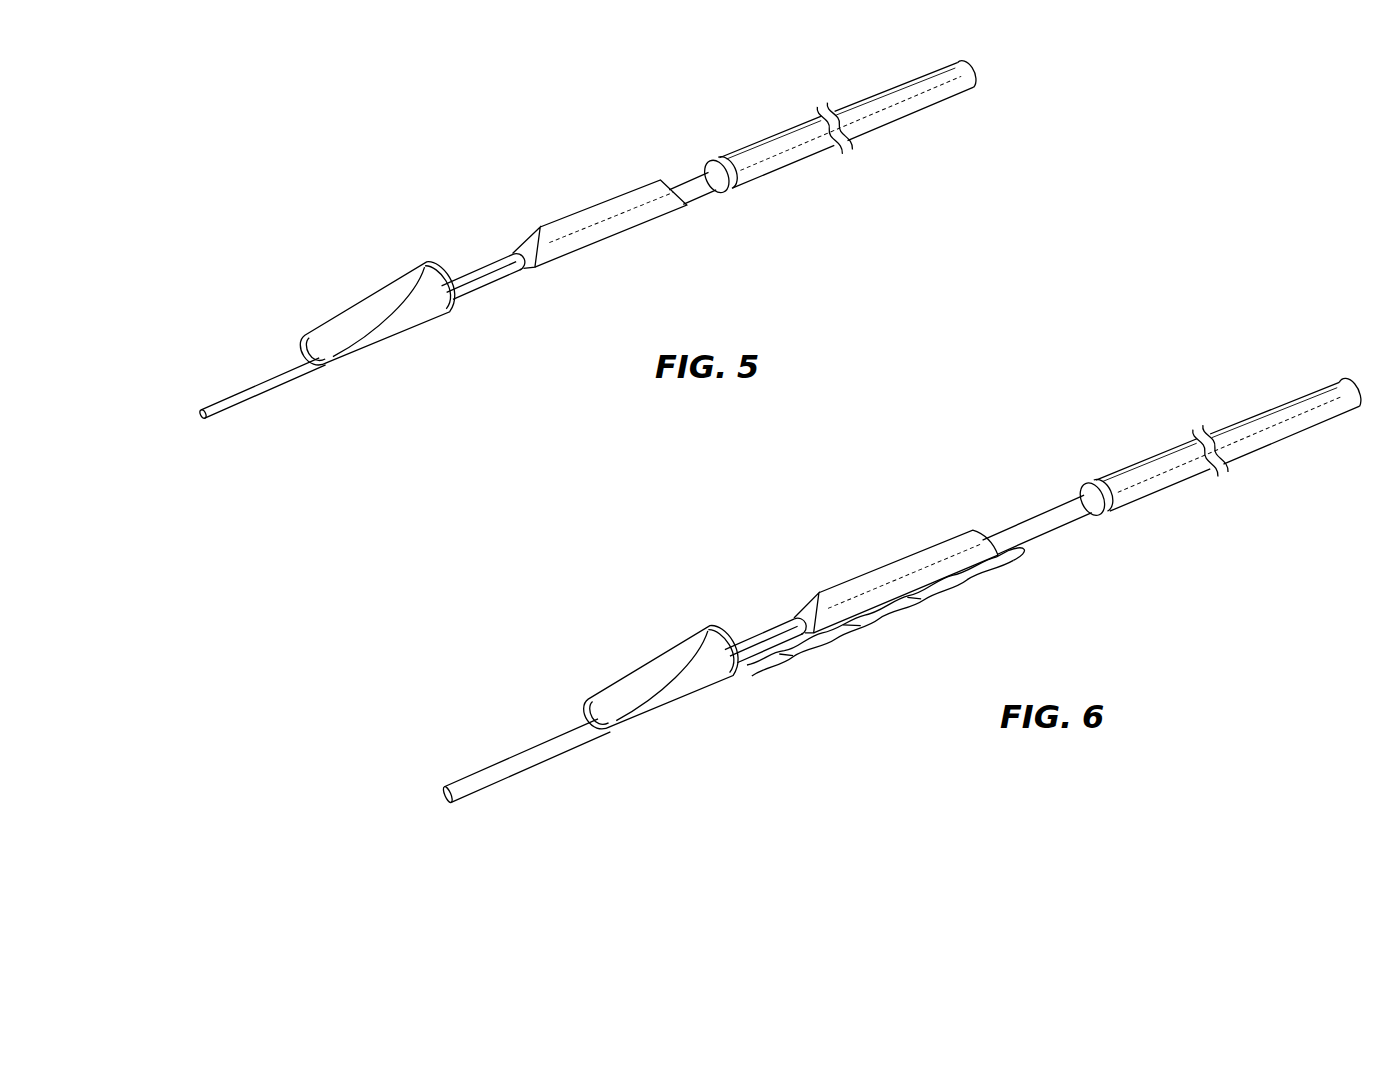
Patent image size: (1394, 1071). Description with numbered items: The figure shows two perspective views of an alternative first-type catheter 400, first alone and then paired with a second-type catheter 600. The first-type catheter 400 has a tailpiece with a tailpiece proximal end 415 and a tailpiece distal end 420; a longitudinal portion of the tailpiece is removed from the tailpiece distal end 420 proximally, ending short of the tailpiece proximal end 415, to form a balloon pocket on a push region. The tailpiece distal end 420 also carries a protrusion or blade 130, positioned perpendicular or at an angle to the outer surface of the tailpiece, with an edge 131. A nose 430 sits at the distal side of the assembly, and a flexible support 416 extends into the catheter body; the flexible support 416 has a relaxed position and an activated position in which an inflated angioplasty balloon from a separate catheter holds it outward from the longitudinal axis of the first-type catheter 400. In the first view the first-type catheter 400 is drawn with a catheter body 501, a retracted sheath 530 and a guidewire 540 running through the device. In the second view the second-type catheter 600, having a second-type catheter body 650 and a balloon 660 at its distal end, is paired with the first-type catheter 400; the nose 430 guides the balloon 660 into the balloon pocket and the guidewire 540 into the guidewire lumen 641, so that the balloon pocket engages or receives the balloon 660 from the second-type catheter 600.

In FIG. 5, the type-1 catheter 400 is at (337, 180).
In FIG. 6, the type-1 catheter 400 is at (622, 548).
In FIG. 5, the protrusion or blade 130 is at (560, 249).
In FIG. 6, the protrusion or blade 130 is at (840, 600).
In FIG. 5, the edge 131 is at (628, 190).
In FIG. 6, the edge 131 is at (922, 545).
In FIG. 5, the tailpiece proximal end 415 is at (699, 205).
In FIG. 6, the tailpiece proximal end 415 is at (1010, 527).
In FIG. 5, the flexible support 416 is at (474, 268).
In FIG. 5, the tailpiece distal end 420 is at (470, 318).
In FIG. 5, the nose 430 is at (353, 291).
In FIG. 6, the nose 430 is at (640, 658).
In FIG. 5, the catheter body 501 is at (727, 200).
In FIG. 6, the catheter body 501 is at (1100, 515).
In FIG. 5, the retracted sheath 530 is at (752, 142).
In FIG. 6, the retracted sheath 530 is at (1230, 428).
In FIG. 5, the guidewire 540 is at (252, 405).
In FIG. 6, the guidewire 540 is at (762, 640).
In FIG. 6, the type-2 catheter 600 is at (491, 779).
In FIG. 6, the guidewire lumen 641 is at (1037, 550).
In FIG. 6, the type-2 catheter body 650 is at (503, 757).
In FIG. 6, the balloon 660 is at (828, 647).